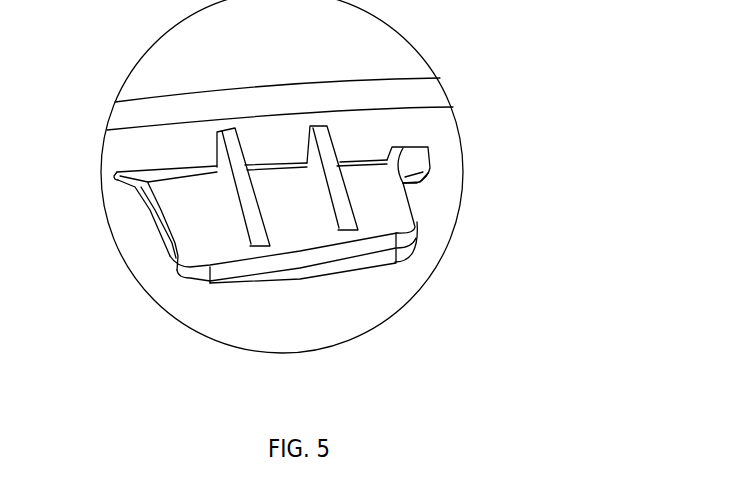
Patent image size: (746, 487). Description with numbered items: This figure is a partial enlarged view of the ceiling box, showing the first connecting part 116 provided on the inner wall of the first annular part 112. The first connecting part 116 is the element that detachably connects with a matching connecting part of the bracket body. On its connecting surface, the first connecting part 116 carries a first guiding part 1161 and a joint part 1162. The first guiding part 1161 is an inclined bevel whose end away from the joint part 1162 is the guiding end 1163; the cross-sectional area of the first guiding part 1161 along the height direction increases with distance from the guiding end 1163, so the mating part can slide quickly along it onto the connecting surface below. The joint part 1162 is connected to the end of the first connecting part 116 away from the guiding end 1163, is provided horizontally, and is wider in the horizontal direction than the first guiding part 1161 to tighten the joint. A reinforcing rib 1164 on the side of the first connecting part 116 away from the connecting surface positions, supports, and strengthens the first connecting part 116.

The first annular part 112 is at (445, 130).
The first connecting part 116 is at (295, 210).
The first guiding part 1161 is at (233, 283).
The joint part 1162 is at (300, 273).
The guiding end 1163 is at (177, 266).
The reinforcing rib 1164 is at (227, 133).